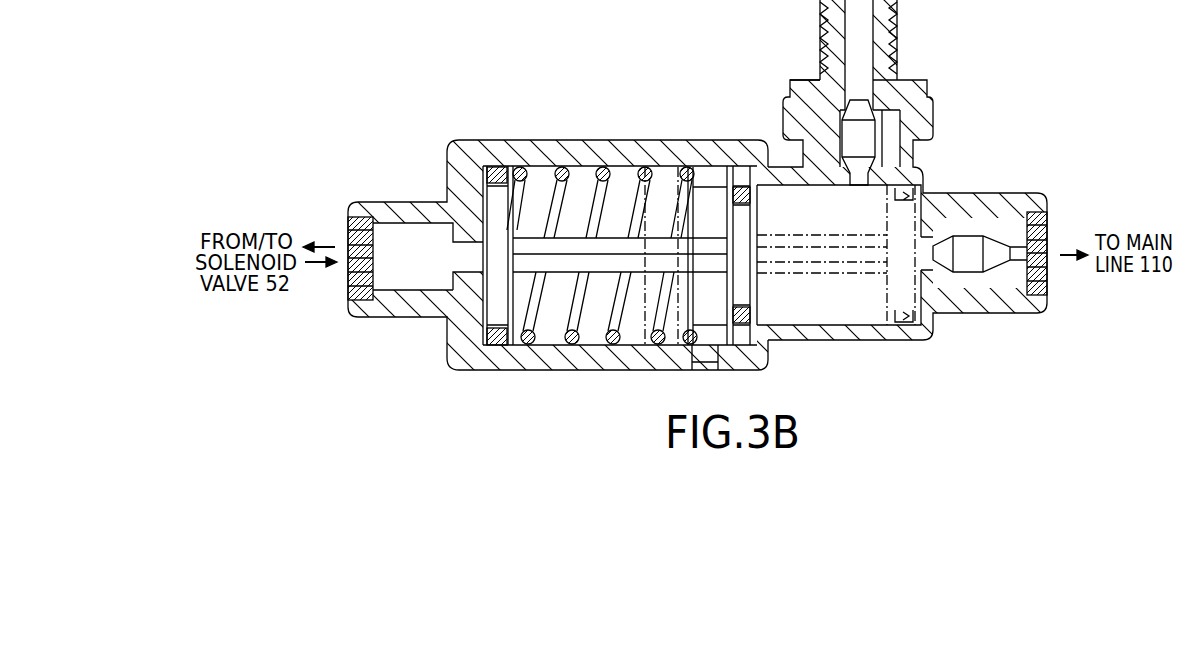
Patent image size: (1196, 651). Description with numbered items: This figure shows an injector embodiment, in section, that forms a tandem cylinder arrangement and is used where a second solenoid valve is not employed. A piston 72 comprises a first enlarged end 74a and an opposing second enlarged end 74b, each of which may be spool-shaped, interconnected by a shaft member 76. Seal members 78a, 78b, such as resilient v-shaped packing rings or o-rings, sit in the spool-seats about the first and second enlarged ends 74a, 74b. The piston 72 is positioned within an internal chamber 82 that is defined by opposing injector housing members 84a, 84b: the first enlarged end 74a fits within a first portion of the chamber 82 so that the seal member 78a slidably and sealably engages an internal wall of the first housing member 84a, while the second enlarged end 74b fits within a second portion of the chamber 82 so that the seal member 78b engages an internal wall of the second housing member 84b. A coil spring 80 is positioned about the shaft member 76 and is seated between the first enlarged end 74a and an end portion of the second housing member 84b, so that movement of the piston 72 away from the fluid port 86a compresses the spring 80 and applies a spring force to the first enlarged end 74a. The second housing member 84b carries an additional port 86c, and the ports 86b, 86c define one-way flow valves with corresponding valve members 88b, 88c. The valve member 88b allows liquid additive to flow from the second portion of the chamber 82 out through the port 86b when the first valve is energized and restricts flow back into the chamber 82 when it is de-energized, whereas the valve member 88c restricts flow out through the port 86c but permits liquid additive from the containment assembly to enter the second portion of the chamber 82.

The piston 72 is at (518, 208).
The first enlarged end 74a is at (510, 343).
The second enlarged end 74b is at (757, 322).
The shaft member 76 is at (622, 168).
The seal member 78a is at (493, 166).
The seal member 78b is at (740, 180).
The coil spring 80 is at (583, 168).
The internal chamber 82 is at (592, 330).
The first injector housing member 84a is at (453, 152).
The second injector housing member 84b is at (934, 173).
The fluid port 86a is at (353, 283).
The port 86b is at (1043, 227).
The additional port 86c is at (887, 133).
The valve member 88b is at (985, 266).
The valve member 88c is at (860, 107).